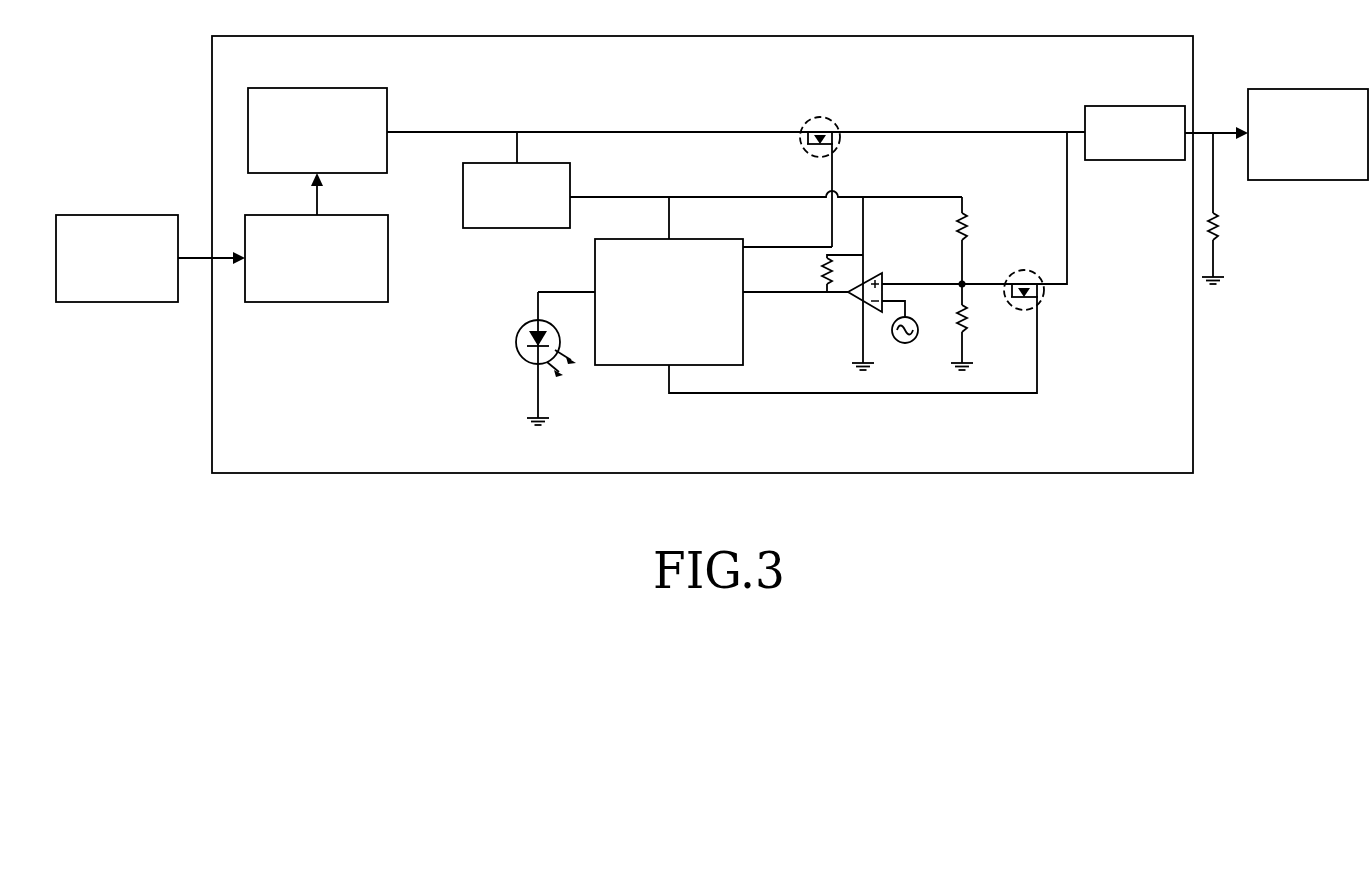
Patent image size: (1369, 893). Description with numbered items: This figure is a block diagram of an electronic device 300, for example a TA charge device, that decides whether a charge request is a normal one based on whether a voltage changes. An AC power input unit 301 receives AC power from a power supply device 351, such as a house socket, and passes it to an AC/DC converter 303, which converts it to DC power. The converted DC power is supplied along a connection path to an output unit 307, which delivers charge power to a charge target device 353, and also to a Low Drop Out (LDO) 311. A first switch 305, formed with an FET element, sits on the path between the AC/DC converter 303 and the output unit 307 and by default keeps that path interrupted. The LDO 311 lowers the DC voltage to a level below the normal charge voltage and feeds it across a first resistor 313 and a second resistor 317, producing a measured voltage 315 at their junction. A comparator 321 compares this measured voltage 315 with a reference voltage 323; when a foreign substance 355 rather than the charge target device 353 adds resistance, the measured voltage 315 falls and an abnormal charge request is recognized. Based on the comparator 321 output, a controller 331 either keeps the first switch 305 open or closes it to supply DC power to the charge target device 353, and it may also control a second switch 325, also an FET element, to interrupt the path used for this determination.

The electronic device 300 is at (1140, 33).
The AC power input unit 301 is at (366, 215).
The AC/DC converter 303 is at (358, 88).
The first switch 305 is at (829, 116).
The output unit 307 is at (1118, 106).
The Low Drop Out (LDO) 311 is at (571, 178).
The first resistor 313 is at (960, 213).
The measured voltage 315 is at (963, 280).
The second resistor 317 is at (968, 320).
The comparator 321 is at (870, 272).
The reference voltage 323 is at (909, 317).
The second switch 325 is at (1027, 270).
The controller 331 is at (731, 239).
The power supply device 351 is at (148, 215).
The charge target device 353 is at (1312, 89).
The foreign substance 355 is at (1216, 214).